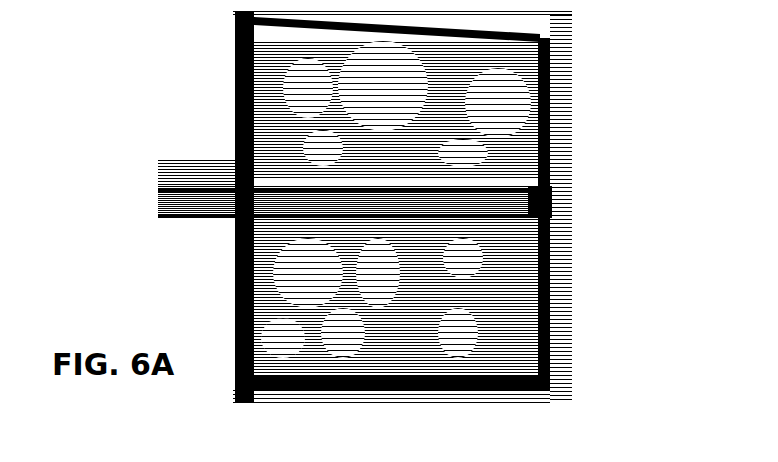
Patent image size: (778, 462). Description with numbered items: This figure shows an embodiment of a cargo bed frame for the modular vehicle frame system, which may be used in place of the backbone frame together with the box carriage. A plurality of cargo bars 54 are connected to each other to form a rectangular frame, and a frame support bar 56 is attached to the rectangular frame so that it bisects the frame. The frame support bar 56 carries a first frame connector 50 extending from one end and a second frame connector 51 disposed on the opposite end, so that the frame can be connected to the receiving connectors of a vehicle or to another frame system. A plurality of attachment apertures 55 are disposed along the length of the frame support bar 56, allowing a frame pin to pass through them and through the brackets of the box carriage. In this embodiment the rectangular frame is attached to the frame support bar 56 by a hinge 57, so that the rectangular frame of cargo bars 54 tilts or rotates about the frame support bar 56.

The first frame connector 50 is at (177, 200).
The second frame connector 51 is at (542, 200).
The cargo bar 54 is at (242, 55).
The attachment aperture 55 is at (307, 210).
The frame support bar 56 is at (488, 192).
The hinge 57 is at (530, 212).